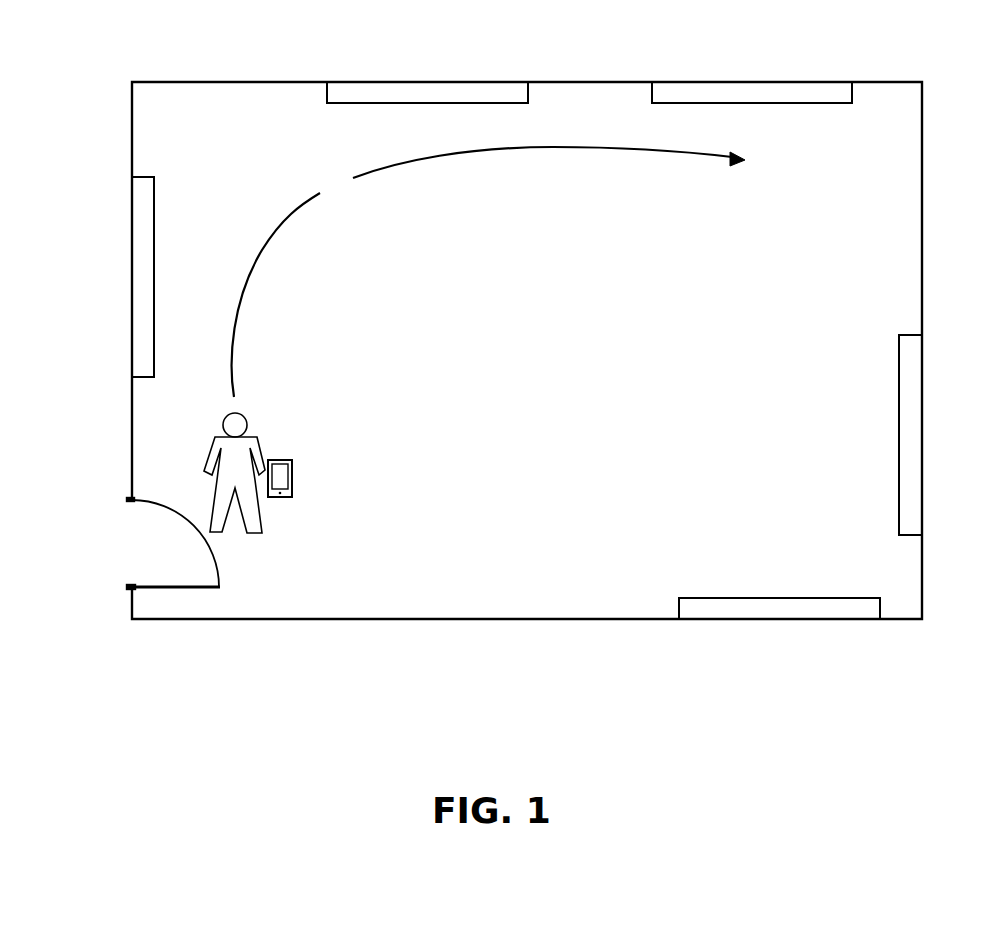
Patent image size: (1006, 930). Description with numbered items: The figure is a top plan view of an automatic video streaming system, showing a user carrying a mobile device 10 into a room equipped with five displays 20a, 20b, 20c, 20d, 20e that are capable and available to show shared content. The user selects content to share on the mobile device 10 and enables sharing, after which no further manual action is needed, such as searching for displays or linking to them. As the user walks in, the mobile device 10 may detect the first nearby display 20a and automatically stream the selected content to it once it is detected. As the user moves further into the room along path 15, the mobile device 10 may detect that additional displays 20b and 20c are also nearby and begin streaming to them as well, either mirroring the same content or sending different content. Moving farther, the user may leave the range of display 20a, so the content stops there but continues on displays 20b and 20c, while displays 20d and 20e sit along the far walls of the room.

The mobile device 10 is at (283, 460).
The path 15 is at (488, 272).
The first nearby display 20a is at (132, 278).
The display 20b is at (427, 82).
The display 20c is at (753, 82).
The display 20d is at (918, 448).
The display 20e is at (780, 619).